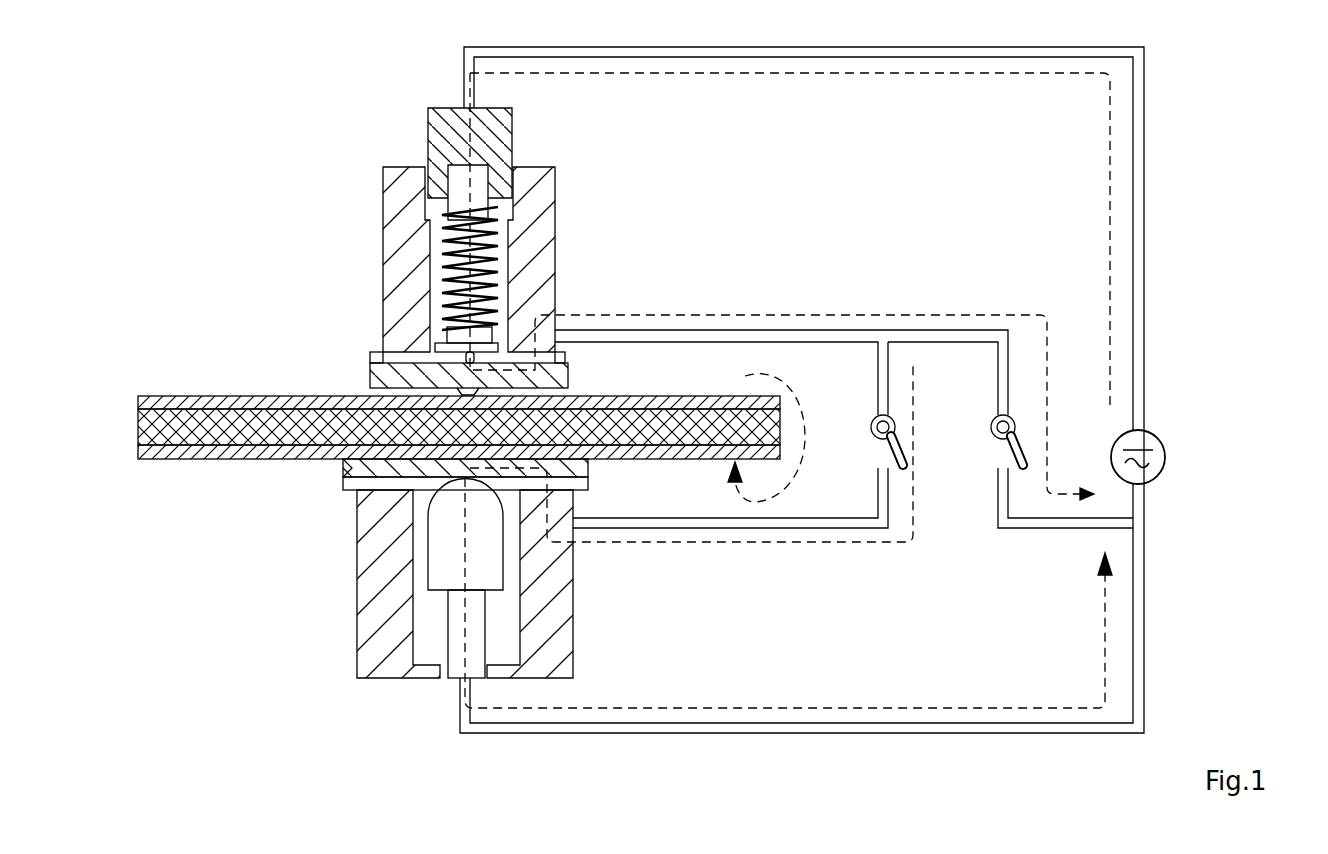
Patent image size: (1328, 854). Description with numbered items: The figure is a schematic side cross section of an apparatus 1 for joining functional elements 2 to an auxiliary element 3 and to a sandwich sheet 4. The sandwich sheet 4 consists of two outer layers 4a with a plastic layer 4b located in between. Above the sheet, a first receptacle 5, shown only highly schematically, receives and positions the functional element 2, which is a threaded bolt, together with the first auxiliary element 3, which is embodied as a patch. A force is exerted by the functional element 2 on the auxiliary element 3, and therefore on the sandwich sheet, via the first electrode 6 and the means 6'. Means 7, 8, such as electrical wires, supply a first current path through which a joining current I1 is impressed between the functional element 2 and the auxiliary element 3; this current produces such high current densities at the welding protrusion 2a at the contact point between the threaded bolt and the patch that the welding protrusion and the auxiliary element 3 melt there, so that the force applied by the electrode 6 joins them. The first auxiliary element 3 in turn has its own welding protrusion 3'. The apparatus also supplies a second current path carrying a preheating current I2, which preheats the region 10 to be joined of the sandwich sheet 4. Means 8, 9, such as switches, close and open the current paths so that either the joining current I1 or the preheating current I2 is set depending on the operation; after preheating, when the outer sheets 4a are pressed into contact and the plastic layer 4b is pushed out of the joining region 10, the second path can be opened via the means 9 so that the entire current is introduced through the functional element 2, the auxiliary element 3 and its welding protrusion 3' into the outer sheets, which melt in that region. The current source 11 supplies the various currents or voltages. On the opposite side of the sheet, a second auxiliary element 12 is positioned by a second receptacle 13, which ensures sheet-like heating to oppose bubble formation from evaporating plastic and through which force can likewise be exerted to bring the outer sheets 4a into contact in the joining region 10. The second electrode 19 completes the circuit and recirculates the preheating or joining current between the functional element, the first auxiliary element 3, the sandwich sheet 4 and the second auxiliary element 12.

The apparatus 1 is at (202, 134).
The functional element 2 is at (445, 277).
The welding protrusion 2a is at (435, 350).
The first auxiliary element 3 is at (449, 376).
The welding protrusion 3' is at (533, 380).
The sandwich sheet 4 is at (459, 412).
The outer layers 4a is at (165, 400).
The plastic layer 4b is at (220, 428).
The first receptacle 5 is at (473, 232).
The first electrode 6 is at (444, 163).
The means 6' is at (446, 265).
The means 7 is at (828, 330).
The means 8 is at (998, 457).
The means 9 is at (878, 457).
The region to be joined 10 is at (318, 477).
The current source 11 is at (1159, 441).
The second auxiliary element 12 is at (345, 500).
The second receptacle 13 is at (424, 589).
The second electrode 19 is at (440, 548).
The joining current I1 is at (782, 78).
The preheating current I2 is at (772, 548).